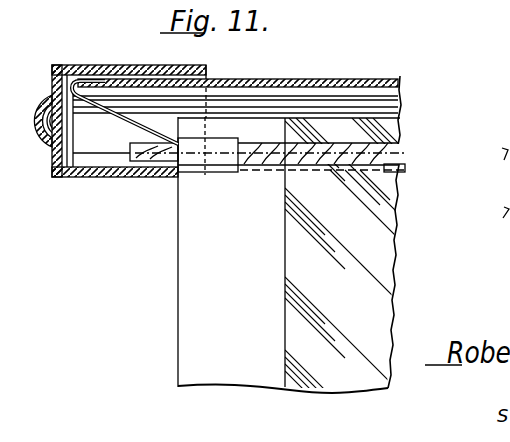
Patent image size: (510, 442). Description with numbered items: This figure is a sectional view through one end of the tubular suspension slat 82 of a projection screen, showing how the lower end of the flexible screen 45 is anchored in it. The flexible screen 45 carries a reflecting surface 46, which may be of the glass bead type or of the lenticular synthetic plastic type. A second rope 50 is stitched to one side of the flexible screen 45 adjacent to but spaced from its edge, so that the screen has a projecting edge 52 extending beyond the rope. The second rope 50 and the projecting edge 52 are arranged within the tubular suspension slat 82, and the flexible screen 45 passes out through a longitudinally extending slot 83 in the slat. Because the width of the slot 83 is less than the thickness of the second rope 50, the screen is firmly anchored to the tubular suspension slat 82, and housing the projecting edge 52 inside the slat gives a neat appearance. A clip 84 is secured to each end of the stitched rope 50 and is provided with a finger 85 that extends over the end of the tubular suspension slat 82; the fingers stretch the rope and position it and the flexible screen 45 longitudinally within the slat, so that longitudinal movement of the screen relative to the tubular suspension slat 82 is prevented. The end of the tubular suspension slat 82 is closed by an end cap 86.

The end cap 86 is at (85, 64).
The tubular suspension slat 82 is at (274, 80).
The projecting edge 52 is at (303, 120).
The second rope 50 is at (343, 157).
The longitudinally extending slot 83 is at (397, 173).
The finger 85 is at (111, 111).
The clip 84 is at (193, 165).
The flexible screen 45 is at (186, 258).
The reflecting surface 46 is at (294, 305).